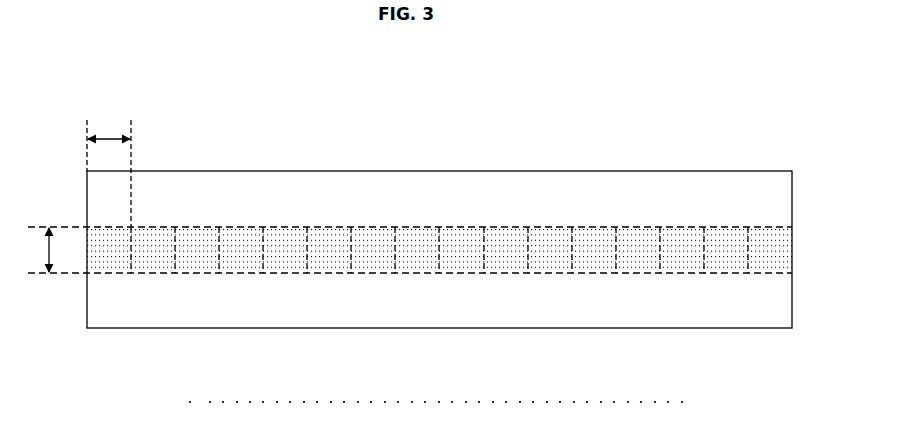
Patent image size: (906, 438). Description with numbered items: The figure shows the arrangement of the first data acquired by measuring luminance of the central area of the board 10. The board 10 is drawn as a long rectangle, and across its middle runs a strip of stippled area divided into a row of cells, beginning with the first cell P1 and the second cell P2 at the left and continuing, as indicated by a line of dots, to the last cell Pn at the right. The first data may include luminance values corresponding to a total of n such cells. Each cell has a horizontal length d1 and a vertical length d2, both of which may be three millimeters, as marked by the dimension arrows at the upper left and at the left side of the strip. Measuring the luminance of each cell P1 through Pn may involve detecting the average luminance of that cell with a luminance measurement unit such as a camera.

The board 10 is at (418, 186).
The first cell P1 is at (108, 258).
The second cell P2 is at (155, 258).
The nth cell Pn is at (772, 258).
The horizontal length d1 is at (109, 165).
The vertical length d2 is at (34, 250).